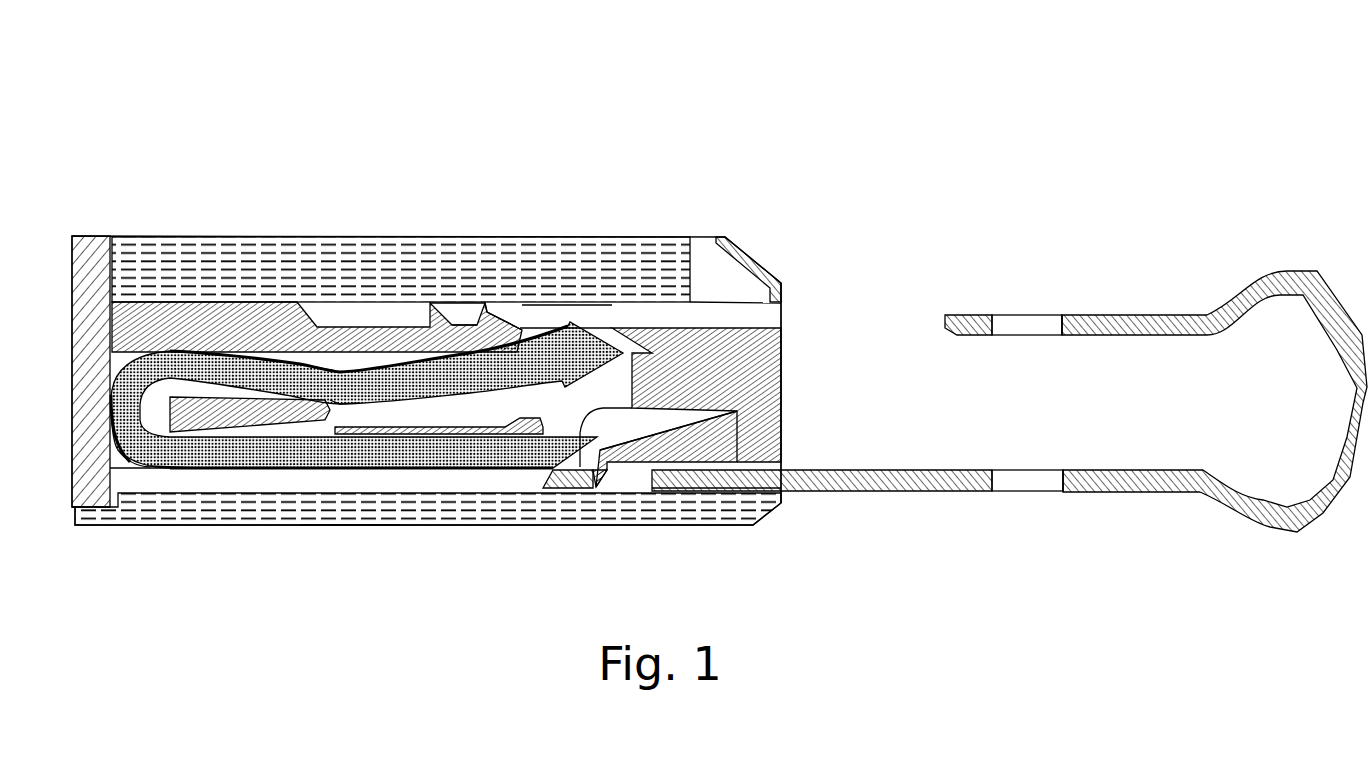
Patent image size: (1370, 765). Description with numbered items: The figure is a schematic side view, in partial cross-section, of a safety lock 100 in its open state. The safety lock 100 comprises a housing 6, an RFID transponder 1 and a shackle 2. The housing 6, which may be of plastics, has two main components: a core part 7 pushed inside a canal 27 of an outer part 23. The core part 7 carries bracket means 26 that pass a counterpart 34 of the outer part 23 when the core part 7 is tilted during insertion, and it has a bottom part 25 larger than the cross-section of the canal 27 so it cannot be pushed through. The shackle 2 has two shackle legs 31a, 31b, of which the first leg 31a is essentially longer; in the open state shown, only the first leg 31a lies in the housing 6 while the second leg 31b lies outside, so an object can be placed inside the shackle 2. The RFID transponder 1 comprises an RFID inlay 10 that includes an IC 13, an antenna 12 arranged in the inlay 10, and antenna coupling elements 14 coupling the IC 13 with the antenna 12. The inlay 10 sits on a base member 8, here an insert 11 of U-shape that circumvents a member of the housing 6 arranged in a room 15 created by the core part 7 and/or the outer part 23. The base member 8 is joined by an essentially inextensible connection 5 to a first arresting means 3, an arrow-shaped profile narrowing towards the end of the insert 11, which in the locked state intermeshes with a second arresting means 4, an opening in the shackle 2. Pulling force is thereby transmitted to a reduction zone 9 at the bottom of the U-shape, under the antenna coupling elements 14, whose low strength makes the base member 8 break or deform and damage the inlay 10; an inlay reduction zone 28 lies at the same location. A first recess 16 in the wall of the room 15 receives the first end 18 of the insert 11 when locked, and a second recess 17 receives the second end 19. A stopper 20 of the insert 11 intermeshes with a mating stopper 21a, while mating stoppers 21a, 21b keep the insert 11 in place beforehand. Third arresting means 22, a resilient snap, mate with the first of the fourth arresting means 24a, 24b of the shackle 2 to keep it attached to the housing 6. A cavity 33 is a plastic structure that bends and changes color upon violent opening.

The RFID transponder 1 is at (360, 175).
The shackle 2 is at (1177, 312).
The first arresting means 3 is at (578, 318).
The second arresting means 4 is at (1028, 323).
The inextensible connection 5 is at (433, 305).
The housing 6 is at (750, 150).
The core part 7 is at (225, 418).
The base member 8 is at (345, 582).
The reduction zone 9 is at (148, 372).
The RFID inlay 10 is at (238, 473).
The insert 11 is at (278, 365).
The antenna 12 is at (310, 368).
The IC 13 is at (175, 473).
The antenna coupling elements 14 is at (142, 470).
The room 15 is at (475, 467).
The first recess 16 is at (637, 357).
The second recess 17 is at (653, 420).
The first end 18 is at (589, 429).
The second end 19 is at (533, 467).
The stopper 20 is at (340, 415).
The mating stopper 21a is at (365, 410).
The mating stopper 21b is at (350, 467).
The third arresting means 22 is at (598, 483).
The outer part 23 is at (665, 250).
The fourth arresting means 24a is at (633, 480).
The fourth arresting means 24b is at (1025, 488).
The bottom part 25 is at (98, 238).
The bracket means 26 is at (487, 312).
The canal 27 is at (540, 320).
The inlay reduction zone 28 is at (123, 543).
The first shackle leg 31a is at (917, 470).
The second shackle leg 31b is at (1092, 335).
The cavity 33 is at (740, 288).
The counterpart 34 is at (465, 322).
The safety lock 100 is at (593, 143).